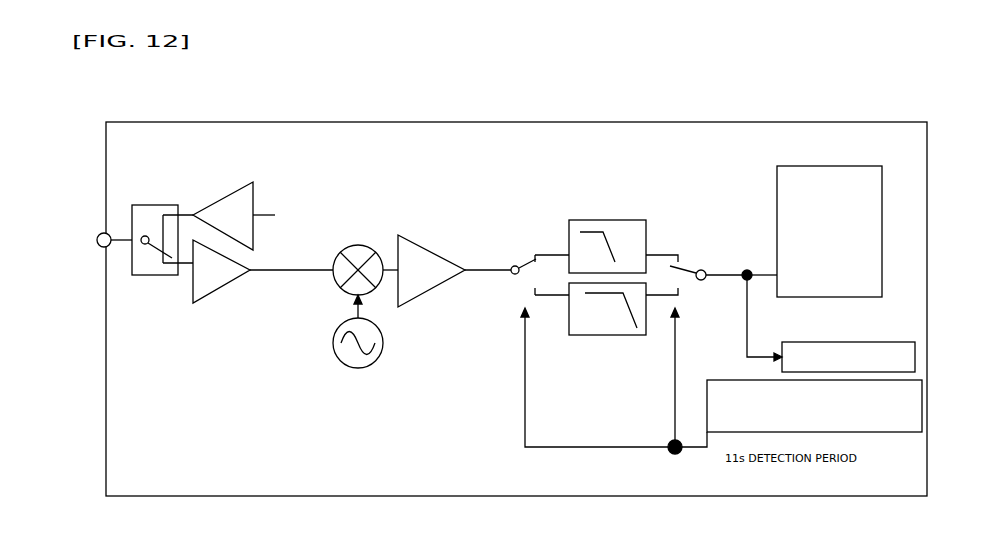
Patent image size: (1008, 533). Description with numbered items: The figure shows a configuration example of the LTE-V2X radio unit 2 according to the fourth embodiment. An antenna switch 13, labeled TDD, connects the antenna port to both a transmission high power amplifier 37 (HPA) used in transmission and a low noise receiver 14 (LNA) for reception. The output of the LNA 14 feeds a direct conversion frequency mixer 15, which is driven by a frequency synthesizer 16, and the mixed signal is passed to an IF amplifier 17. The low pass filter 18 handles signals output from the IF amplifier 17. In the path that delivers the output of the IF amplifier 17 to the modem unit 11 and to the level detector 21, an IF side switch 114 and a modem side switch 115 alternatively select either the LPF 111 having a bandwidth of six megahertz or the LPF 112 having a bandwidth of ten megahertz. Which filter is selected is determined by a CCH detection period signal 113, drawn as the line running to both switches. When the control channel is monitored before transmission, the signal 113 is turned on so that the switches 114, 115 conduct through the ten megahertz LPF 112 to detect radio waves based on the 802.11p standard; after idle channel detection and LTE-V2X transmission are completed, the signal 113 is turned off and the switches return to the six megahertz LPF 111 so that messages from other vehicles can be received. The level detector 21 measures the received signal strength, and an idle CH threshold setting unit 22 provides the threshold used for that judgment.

The LTE-V2X radio unit 2 is at (215, 121).
The modem unit 11 is at (806, 165).
The antenna switch 13 is at (150, 205).
The low noise receiver (LNA) 14 is at (215, 291).
The direct conversion frequency mixer 15 is at (342, 289).
The frequency synthesizer 16 is at (380, 331).
The IF amplifier 17 is at (418, 243).
The low pass filter (LPF) 18 is at (497, 272).
The level detector 21 is at (815, 341).
The idle CH threshold setting unit 22 is at (705, 394).
The transmission high power amplifier (HPA) 37 is at (225, 197).
The LPF having a bandwidth of 6 MHz 111 is at (609, 221).
The LPF having a bandwidth of 10 MHz 112 is at (617, 336).
The CCH detection period signal 113 is at (555, 445).
The IF side switch 114 is at (528, 262).
The modem side switch 115 is at (684, 268).